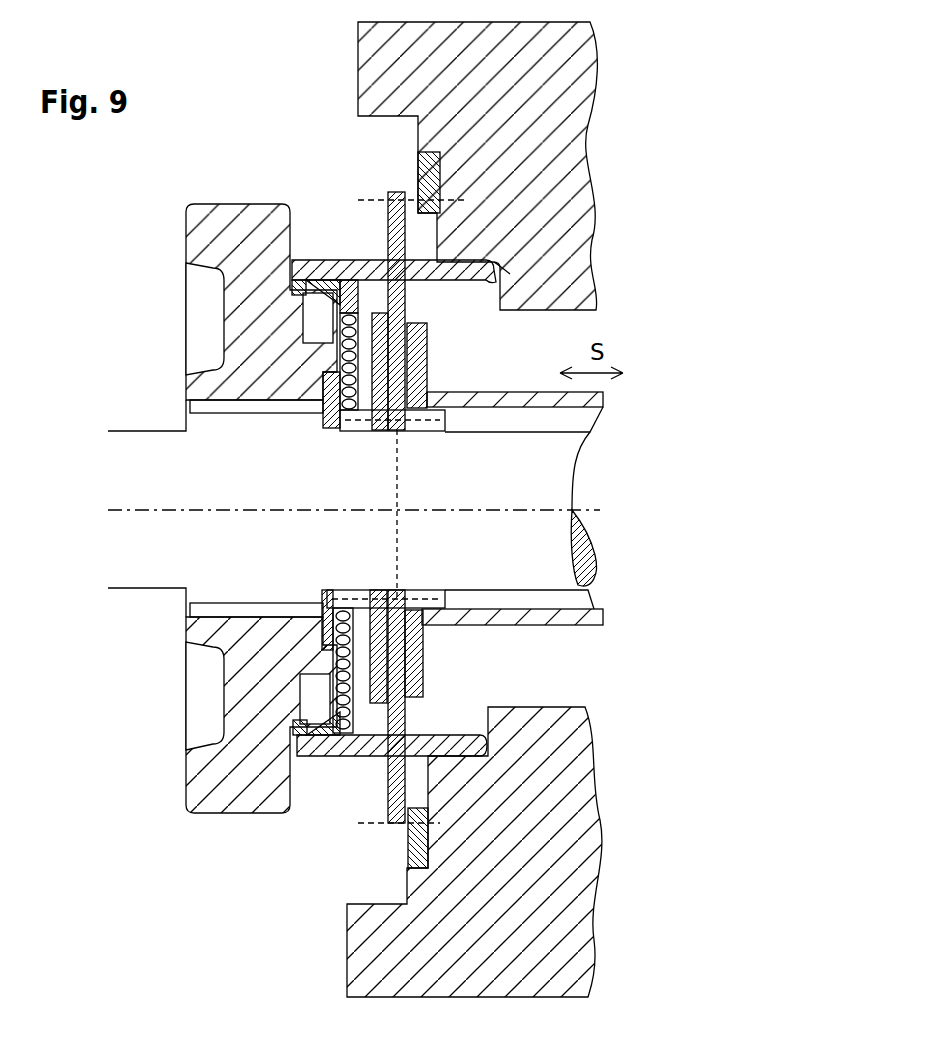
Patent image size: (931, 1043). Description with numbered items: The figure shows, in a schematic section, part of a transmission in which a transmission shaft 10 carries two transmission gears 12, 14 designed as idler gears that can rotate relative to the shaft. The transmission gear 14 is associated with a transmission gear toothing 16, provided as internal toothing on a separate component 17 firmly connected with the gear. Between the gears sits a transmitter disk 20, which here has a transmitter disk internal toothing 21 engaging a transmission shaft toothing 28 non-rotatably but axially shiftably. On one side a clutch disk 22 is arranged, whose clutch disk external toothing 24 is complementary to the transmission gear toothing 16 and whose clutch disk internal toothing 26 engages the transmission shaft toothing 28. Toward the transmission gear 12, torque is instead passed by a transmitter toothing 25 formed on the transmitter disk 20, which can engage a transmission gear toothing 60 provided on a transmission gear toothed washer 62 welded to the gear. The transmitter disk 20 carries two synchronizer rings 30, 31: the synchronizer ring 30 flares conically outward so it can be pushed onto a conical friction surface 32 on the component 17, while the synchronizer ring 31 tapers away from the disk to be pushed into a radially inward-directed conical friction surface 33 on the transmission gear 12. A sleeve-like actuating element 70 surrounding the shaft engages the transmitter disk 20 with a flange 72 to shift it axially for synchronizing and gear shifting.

The transmission shaft 10 is at (263, 477).
The transmission gear 12 is at (574, 172).
The transmission gear 14 is at (241, 228).
The transmission gear toothing 16 is at (347, 415).
The component 17 is at (306, 318).
The transmitter disk 20 is at (390, 238).
The transmitter disk internal toothing 21 is at (408, 428).
The clutch disk 22 is at (360, 592).
The clutch disk external toothing 24 is at (360, 758).
The transmitter toothing 25 is at (383, 197).
The clutch disk internal toothing 26 is at (375, 434).
The transmission shaft toothing 28 is at (443, 421).
The synchronizer ring 30 is at (325, 263).
The synchronizer ring 31 is at (464, 287).
The friction surface 32 is at (318, 755).
The friction surface 33 is at (498, 270).
The transmission gear toothing 60 is at (393, 825).
The transmission gear toothed washer 62 is at (407, 850).
The actuating element 70 is at (484, 397).
The flange 72 is at (408, 646).